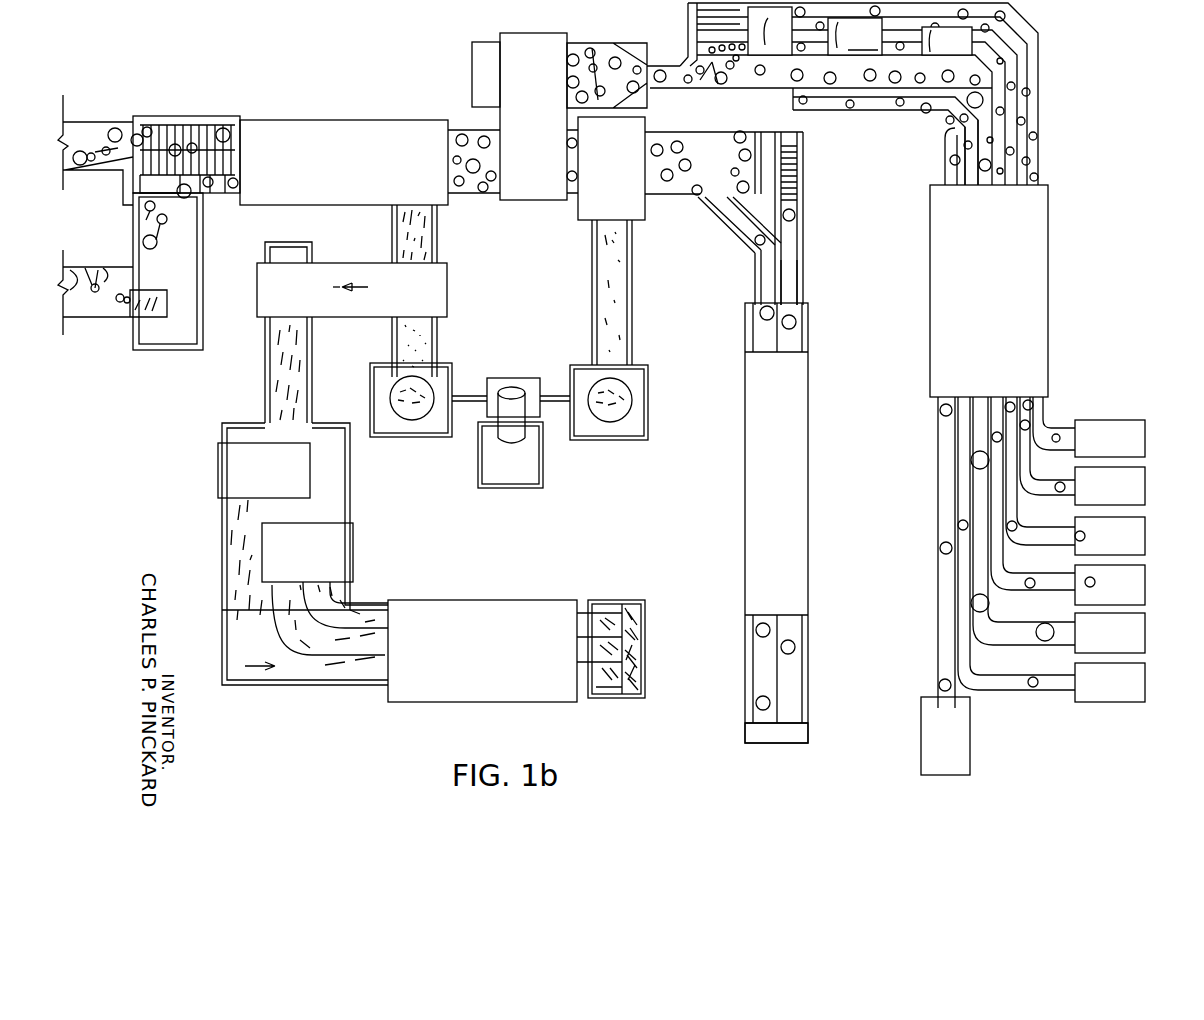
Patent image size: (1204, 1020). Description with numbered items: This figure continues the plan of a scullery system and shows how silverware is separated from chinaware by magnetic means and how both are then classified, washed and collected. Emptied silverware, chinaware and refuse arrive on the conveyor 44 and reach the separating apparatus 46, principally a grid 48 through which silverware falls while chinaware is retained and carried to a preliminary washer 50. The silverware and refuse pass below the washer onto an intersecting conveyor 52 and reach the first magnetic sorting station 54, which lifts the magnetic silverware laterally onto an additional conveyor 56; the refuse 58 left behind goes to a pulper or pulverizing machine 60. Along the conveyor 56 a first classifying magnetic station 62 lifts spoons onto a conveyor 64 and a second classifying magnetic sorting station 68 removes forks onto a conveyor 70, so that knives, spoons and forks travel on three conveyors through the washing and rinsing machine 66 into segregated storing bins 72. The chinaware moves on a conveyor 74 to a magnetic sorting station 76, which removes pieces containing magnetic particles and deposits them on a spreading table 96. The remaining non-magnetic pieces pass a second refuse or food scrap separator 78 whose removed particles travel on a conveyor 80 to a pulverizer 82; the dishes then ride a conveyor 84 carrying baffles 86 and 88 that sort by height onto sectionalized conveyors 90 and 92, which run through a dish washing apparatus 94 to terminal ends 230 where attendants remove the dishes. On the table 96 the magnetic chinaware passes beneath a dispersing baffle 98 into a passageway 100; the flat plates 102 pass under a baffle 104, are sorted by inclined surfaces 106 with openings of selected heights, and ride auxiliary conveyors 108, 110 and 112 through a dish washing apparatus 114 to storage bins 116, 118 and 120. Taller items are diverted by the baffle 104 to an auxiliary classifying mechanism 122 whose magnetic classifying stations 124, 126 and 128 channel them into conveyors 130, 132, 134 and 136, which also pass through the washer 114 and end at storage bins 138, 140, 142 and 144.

The conveyor 44 is at (106, 308).
The separating apparatus 46 is at (183, 111).
The grid 48 is at (191, 130).
The preliminary washer 50 is at (329, 136).
The intersecting conveyor 52 is at (433, 250).
The first magnetic sorting station 54 is at (345, 270).
The additional conveyor 56 is at (272, 357).
The refuse 58 is at (436, 351).
The pulper or pulverizing machine 60 is at (413, 412).
The first classifying magnetic station 62 is at (226, 467).
The conveyor 64 is at (236, 526).
The washing and rinsing machine 66 is at (490, 606).
The second classifying magnetic sorting station 68 is at (346, 548).
The conveyor 70 is at (340, 598).
The segregated storing bins 72 is at (630, 612).
The conveyor 74 is at (468, 140).
The magnetic sorting station 76 is at (525, 46).
The second refuse or food scrap separator 78 is at (597, 163).
The conveyor 80 is at (625, 250).
The pulverizer 82 is at (630, 396).
The conveyor 84 is at (712, 146).
The baffle 86 is at (697, 150).
The baffle 88 is at (770, 150).
The sectionalized conveyor 90 is at (762, 268).
The sectionalized conveyor 92 is at (792, 263).
The dish washing apparatus 94 is at (806, 502).
The spreading table 96 is at (596, 50).
The dispersing baffle 98 is at (586, 79).
The passageway 100 is at (648, 76).
The flat plates 102 is at (760, 80).
The baffle 104 is at (704, 70).
The inclined surfaces 106 is at (880, 100).
The auxiliary conveyor 108 is at (953, 133).
The auxiliary conveyor 110 is at (963, 140).
The auxiliary conveyor 112 is at (977, 148).
The dish washing apparatus 114 is at (1049, 305).
The storage bin 116 is at (960, 726).
The storage bin 118 is at (1115, 700).
The storage bin 120 is at (1140, 631).
The auxiliary classifying mechanism 122 is at (1052, 34).
The magnetic classifying station 124 is at (770, 31).
The magnetic classifying station 126 is at (855, 36).
The magnetic classifying station 128 is at (947, 41).
The first conveyor 130 is at (695, 48).
The second conveyor 132 is at (700, 28).
The third conveyor 134 is at (674, 28).
The last conveyor 136 is at (700, 10).
The storage bin 138 is at (1140, 580).
The storage bin 140 is at (1140, 533).
The storage bin 142 is at (1140, 482).
The storage bin 144 is at (1146, 452).
The terminal ends 230 is at (773, 738).